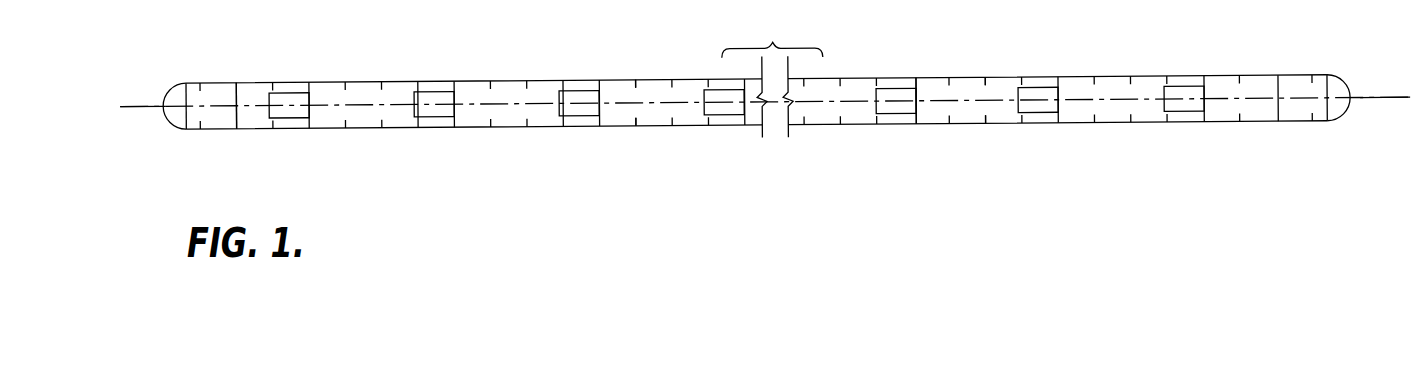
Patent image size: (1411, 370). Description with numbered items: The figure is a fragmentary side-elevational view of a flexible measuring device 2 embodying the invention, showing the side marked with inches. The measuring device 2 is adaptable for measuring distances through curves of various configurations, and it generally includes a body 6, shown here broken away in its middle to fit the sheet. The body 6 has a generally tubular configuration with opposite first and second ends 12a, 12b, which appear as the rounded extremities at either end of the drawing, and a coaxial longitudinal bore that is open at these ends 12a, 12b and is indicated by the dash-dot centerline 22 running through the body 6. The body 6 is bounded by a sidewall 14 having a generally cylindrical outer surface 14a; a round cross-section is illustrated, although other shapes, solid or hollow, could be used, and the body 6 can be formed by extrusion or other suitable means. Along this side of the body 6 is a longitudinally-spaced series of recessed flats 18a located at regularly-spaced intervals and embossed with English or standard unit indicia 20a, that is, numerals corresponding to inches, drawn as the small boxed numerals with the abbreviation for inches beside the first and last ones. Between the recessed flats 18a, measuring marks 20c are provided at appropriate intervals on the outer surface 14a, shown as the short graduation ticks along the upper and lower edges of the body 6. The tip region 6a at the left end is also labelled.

The measuring device 2 is at (1303, 160).
The body 6 is at (228, 138).
The tape end tip 6a is at (150, 121).
The first end 12a is at (240, 94).
The second end 12b is at (1285, 80).
The sidewall 14 is at (917, 125).
The outer surface 14a is at (977, 77).
The recessed flats 18a is at (568, 117).
The English unit indicia 20a is at (886, 93).
The measuring marks 20c is at (634, 86).
The axis line 22 is at (133, 107).